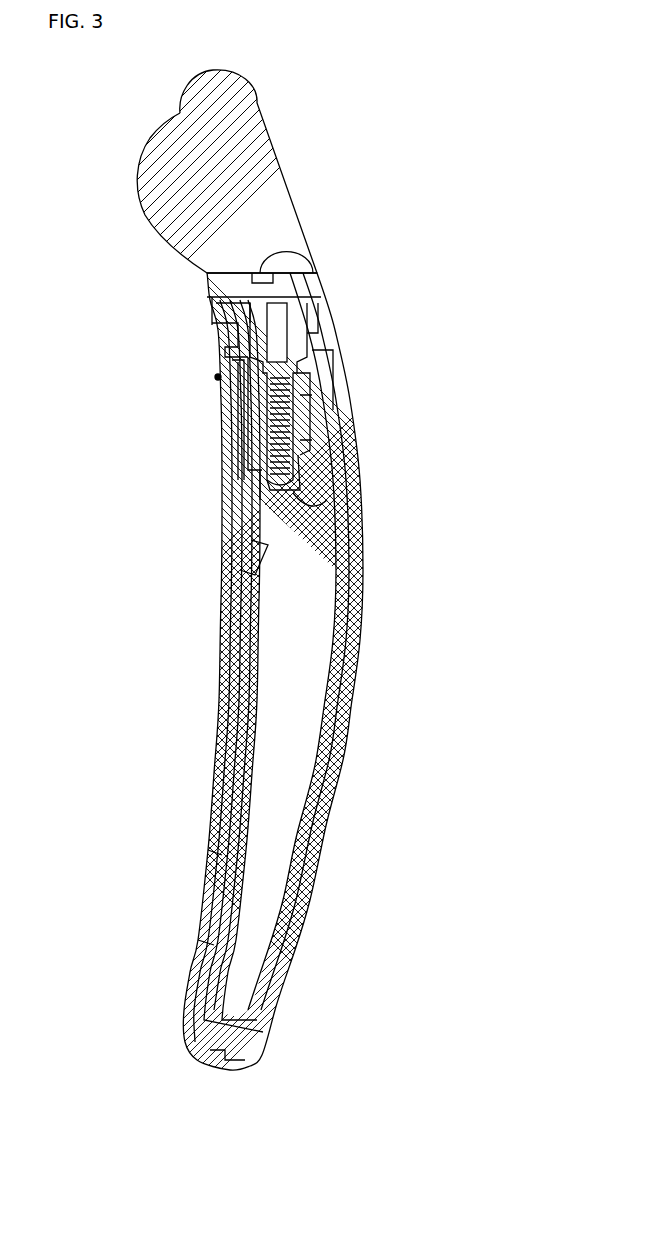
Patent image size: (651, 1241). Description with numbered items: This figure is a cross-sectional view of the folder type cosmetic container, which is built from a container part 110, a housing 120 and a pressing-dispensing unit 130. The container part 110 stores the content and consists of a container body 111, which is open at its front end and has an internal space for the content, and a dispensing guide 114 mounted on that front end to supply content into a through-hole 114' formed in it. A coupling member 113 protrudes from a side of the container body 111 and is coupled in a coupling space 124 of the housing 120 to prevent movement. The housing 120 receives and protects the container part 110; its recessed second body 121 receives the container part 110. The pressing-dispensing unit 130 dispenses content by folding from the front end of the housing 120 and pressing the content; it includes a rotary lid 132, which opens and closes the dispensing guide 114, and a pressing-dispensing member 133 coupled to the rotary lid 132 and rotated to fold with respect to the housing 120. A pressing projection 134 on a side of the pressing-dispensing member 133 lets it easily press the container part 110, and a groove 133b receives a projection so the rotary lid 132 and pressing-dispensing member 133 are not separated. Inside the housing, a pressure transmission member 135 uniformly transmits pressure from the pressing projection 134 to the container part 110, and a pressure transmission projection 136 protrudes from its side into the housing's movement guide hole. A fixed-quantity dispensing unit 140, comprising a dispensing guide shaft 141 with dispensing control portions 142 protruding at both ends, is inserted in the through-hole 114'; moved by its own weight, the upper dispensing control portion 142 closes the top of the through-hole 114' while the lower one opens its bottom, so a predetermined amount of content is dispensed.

The pressing-dispensing unit 130 is at (193, 170).
The pressing projection 134 is at (140, 193).
The pressing-dispensing member 133 is at (282, 173).
The groove 133b is at (313, 262).
The rotary lid 132 is at (330, 290).
The dispensing guide 114 is at (232, 356).
The container part 110 is at (216, 377).
The coupling member 113 is at (222, 408).
The through-hole 114' is at (211, 428).
The fixed-quantity dispensing unit 140 is at (343, 405).
The dispensing guide shaft 141 is at (345, 432).
The dispensing control portions 142 is at (340, 470).
The housing 120 is at (365, 705).
The second body 121 is at (365, 585).
The coupling space 124 is at (220, 550).
The pressure transmission projection 136 is at (220, 725).
The container body 111 is at (350, 750).
The pressure transmission member 135 is at (198, 933).